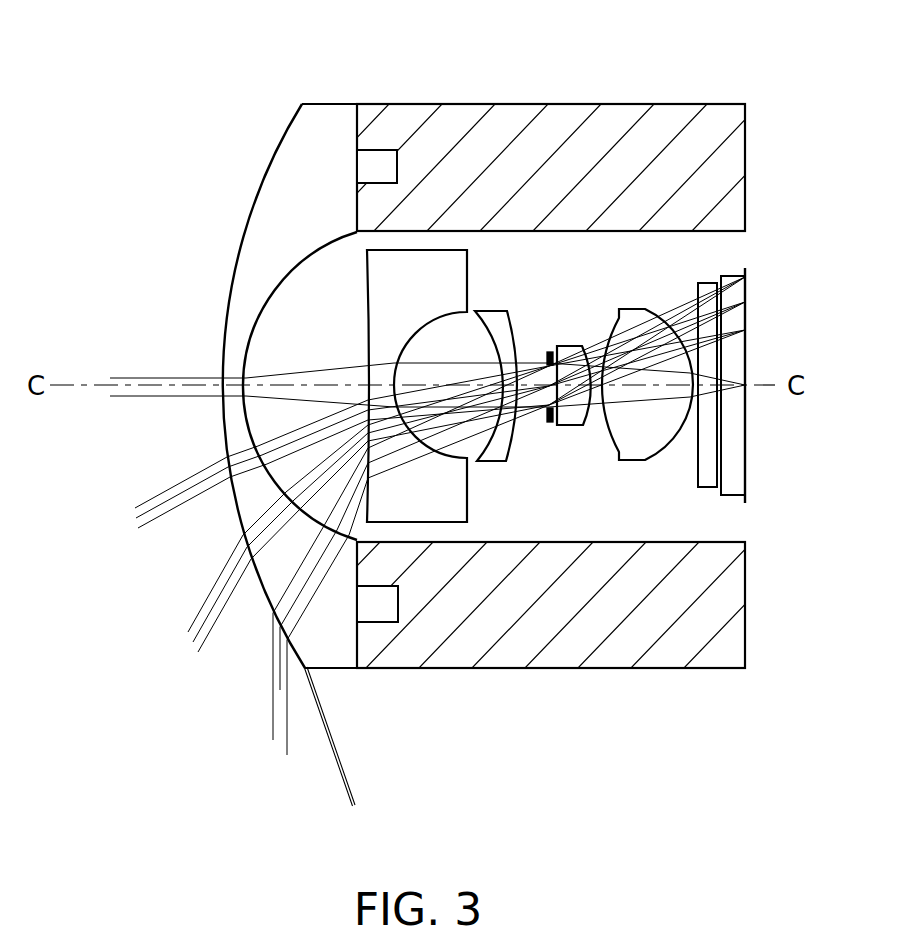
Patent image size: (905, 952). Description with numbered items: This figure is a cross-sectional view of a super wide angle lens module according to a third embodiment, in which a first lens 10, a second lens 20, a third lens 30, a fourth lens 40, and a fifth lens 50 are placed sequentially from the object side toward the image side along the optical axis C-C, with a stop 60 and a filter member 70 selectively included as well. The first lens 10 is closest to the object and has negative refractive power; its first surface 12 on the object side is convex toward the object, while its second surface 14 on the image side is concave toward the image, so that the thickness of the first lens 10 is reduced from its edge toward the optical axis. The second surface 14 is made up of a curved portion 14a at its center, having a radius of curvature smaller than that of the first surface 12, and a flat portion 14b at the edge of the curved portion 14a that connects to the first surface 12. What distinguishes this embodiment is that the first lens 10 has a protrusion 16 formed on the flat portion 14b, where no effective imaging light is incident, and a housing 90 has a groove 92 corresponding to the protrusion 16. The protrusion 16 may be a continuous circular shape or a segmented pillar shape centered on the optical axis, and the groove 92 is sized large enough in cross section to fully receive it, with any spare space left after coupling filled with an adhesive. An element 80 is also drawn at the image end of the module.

The first lens 10 is at (327, 108).
The first surface 12 is at (260, 588).
The second surface 14 is at (357, 758).
The curved portion 14a is at (295, 560).
The flat portion 14b is at (358, 636).
The protrusion 16 is at (375, 160).
The groove 92 is at (398, 168).
The housing 90 is at (585, 104).
The second lens 20 is at (443, 265).
The third lens 30 is at (487, 315).
The stop 60 is at (550, 352).
The fourth lens 40 is at (568, 345).
The fifth lens 50 is at (633, 309).
The filter member 70 is at (705, 283).
The image sensor 80 is at (727, 276).